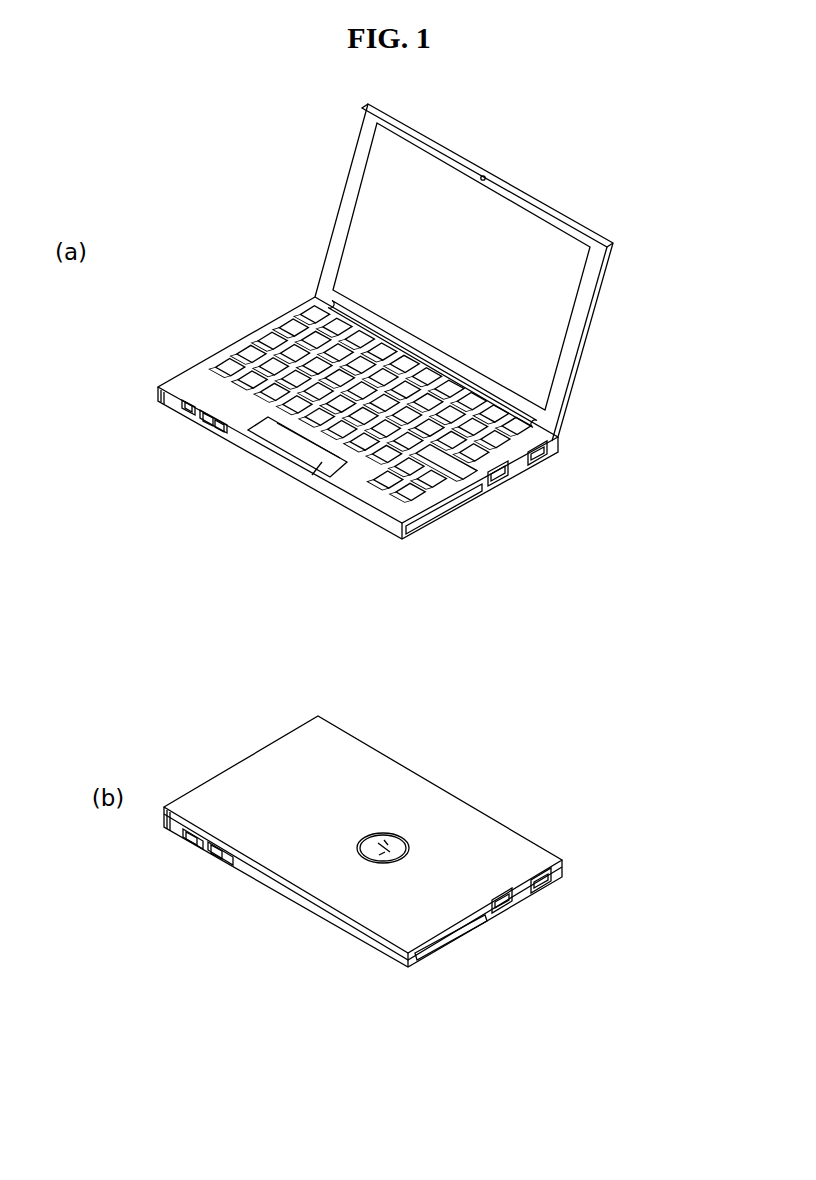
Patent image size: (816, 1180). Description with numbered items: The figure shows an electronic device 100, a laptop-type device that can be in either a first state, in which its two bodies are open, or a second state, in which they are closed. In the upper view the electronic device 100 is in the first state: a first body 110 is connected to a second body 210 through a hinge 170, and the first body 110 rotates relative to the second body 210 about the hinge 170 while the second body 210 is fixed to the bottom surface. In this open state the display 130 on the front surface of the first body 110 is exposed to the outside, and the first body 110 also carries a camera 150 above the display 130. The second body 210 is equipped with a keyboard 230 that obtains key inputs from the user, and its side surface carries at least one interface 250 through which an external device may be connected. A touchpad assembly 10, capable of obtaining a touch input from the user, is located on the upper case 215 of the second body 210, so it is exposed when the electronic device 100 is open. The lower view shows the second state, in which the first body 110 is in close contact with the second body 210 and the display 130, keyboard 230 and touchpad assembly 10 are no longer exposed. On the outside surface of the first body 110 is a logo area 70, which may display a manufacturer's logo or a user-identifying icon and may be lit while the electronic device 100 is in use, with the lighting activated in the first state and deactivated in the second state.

The electronic device 100 is at (277, 144).
The first body 110 is at (628, 280).
The display 130 is at (362, 233).
The camera 150 is at (485, 174).
The hinge 170 is at (507, 409).
The second body 210 is at (468, 528).
The upper case 215 is at (197, 383).
The touchpad assembly 10 is at (283, 449).
The keyboard 230 is at (478, 466).
The interface 250 is at (542, 462).
The logo area 70 is at (376, 803).